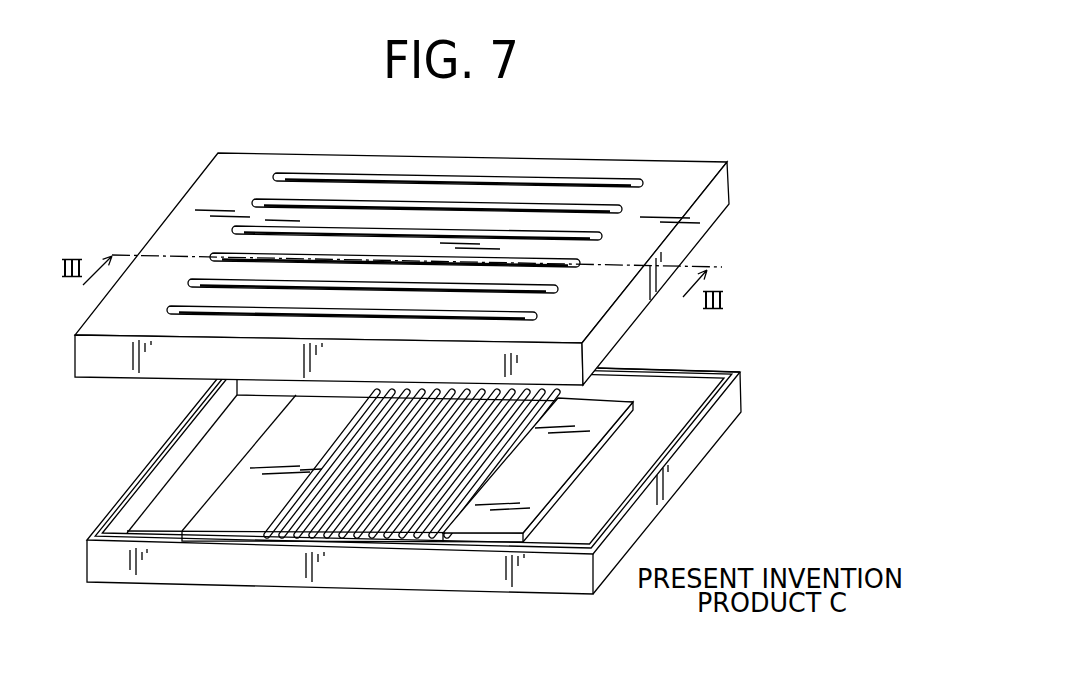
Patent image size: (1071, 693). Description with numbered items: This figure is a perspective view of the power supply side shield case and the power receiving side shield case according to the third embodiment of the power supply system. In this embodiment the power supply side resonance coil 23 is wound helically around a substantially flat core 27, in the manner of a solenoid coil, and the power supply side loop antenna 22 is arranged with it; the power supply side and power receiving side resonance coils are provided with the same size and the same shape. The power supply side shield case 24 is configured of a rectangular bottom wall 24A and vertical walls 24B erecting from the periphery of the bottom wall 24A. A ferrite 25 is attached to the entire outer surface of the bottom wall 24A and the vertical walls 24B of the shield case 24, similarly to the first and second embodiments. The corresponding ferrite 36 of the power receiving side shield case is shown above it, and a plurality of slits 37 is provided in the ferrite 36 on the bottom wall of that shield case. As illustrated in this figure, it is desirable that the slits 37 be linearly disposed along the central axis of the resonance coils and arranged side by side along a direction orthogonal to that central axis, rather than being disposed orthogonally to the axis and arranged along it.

The power supply side loop antenna 22 is at (407, 486).
The power supply side resonance coil 23 is at (353, 495).
The power supply side shield case 24 is at (818, 383).
The bottom wall 24A is at (665, 423).
The vertical wall 24B is at (688, 388).
The ferrite 25 is at (548, 573).
The core 27 is at (245, 513).
The ferrite 36 is at (431, 250).
The slits 37 is at (548, 186).